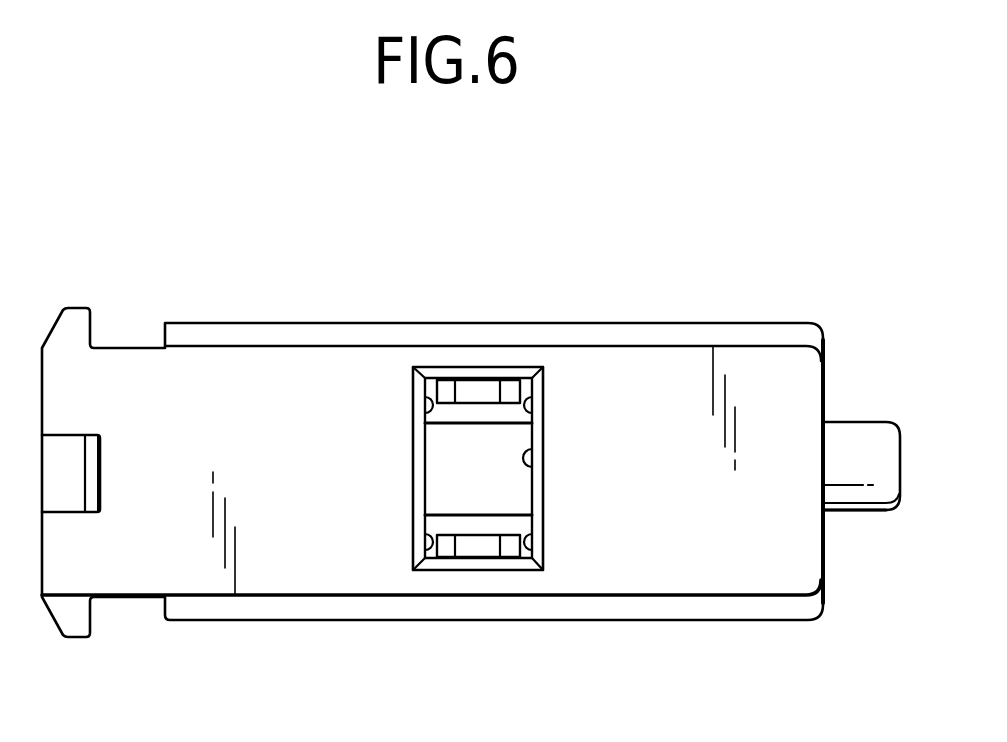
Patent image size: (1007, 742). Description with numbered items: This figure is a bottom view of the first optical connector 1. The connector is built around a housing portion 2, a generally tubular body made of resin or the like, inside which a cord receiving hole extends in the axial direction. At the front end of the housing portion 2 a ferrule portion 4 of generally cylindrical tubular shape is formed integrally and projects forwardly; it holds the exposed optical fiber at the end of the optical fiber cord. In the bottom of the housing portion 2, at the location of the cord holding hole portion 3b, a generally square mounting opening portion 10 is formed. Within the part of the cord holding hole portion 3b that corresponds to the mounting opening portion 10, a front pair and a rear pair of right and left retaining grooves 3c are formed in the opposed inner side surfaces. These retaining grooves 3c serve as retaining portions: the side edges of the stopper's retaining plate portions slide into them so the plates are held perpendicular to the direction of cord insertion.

The first optical connector 1 is at (637, 275).
The housing portion 2 is at (675, 570).
The cord holding hole portion 3b is at (497, 515).
The retaining grooves 3c is at (425, 401).
The mounting opening portion 10 is at (532, 451).
The ferrule portion 4 is at (877, 517).